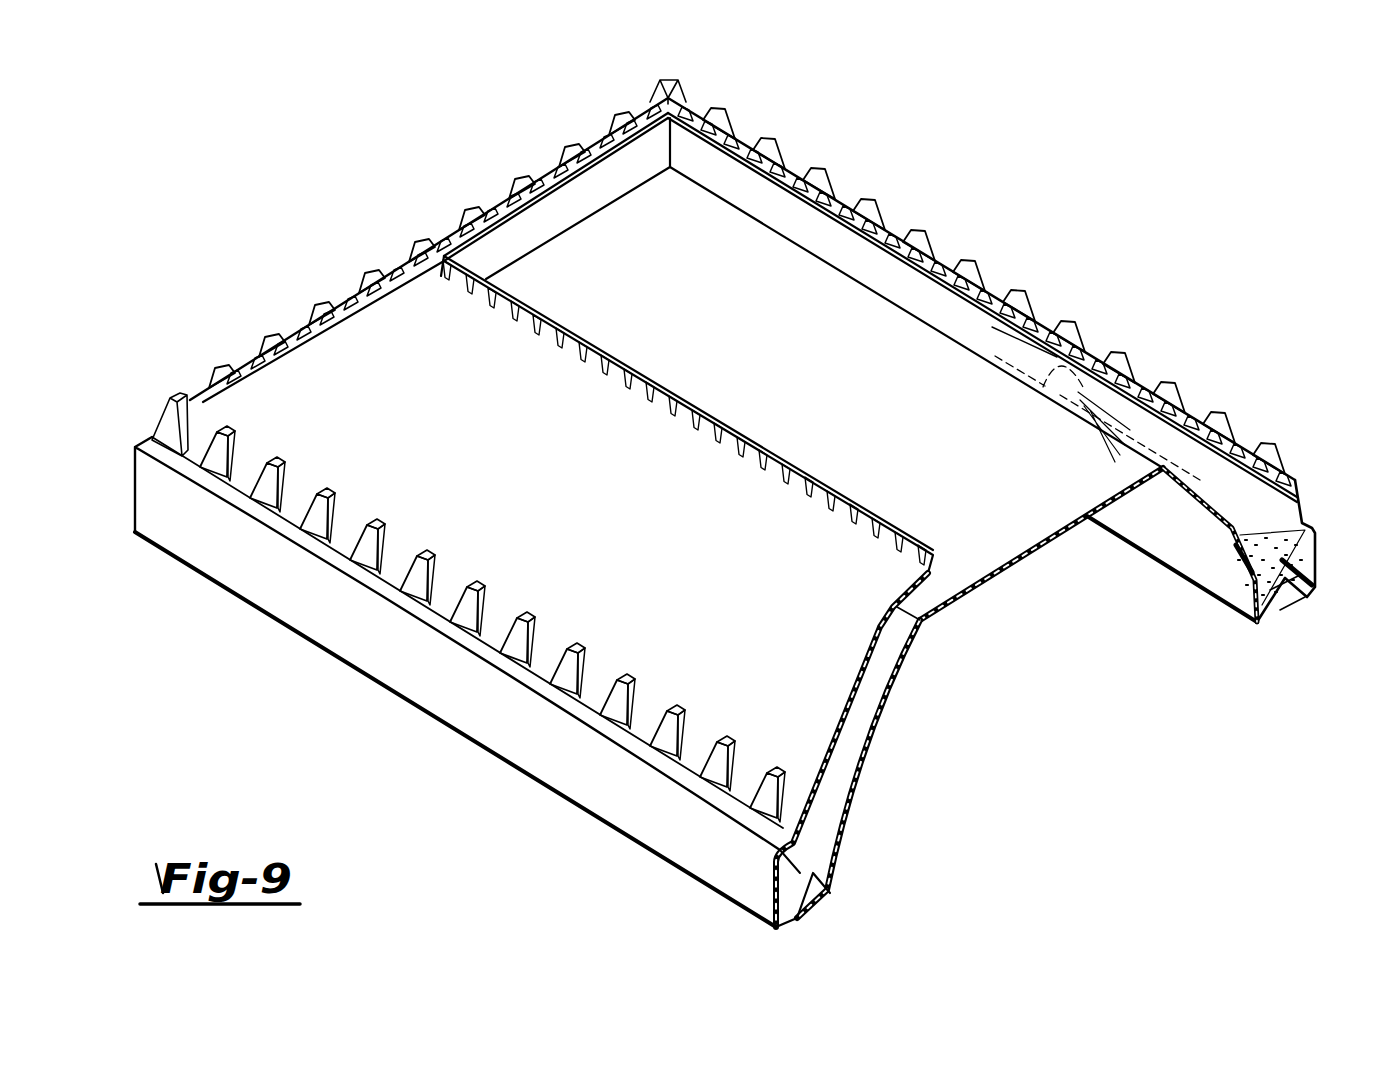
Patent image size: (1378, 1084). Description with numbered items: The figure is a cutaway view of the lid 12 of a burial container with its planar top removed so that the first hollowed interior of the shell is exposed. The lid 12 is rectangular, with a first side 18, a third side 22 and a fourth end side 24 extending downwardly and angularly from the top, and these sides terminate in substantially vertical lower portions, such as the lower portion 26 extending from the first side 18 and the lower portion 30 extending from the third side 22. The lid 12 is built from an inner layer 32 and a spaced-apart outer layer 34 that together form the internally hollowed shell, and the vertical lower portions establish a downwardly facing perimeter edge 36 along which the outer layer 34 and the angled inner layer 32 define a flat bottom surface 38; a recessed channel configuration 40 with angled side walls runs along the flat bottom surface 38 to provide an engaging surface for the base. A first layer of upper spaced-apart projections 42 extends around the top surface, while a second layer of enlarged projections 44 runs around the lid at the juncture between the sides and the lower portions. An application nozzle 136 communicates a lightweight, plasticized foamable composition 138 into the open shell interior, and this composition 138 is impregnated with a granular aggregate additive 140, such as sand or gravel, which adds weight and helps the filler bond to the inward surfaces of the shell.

The lid 12 is at (470, 146).
The first side 18 is at (432, 433).
The third side 22 is at (838, 188).
The fourth end side 24 is at (372, 300).
The lower portion 26 is at (560, 816).
The lower portion 30 is at (1308, 522).
The inner layer 32 is at (927, 423).
The outer layer 34 is at (733, 875).
The downwardly facing perimeter edge 36 is at (736, 913).
The flat bottom surface 38 is at (796, 924).
The recessed channel configuration 40 is at (816, 905).
The upper spaced apart projections 42 is at (610, 370).
The enlarged spaced apart projections 44 is at (530, 614).
The application nozzle 136 is at (998, 332).
The foamable composition 138 is at (1222, 560).
The aggregate additive 140 is at (1297, 597).